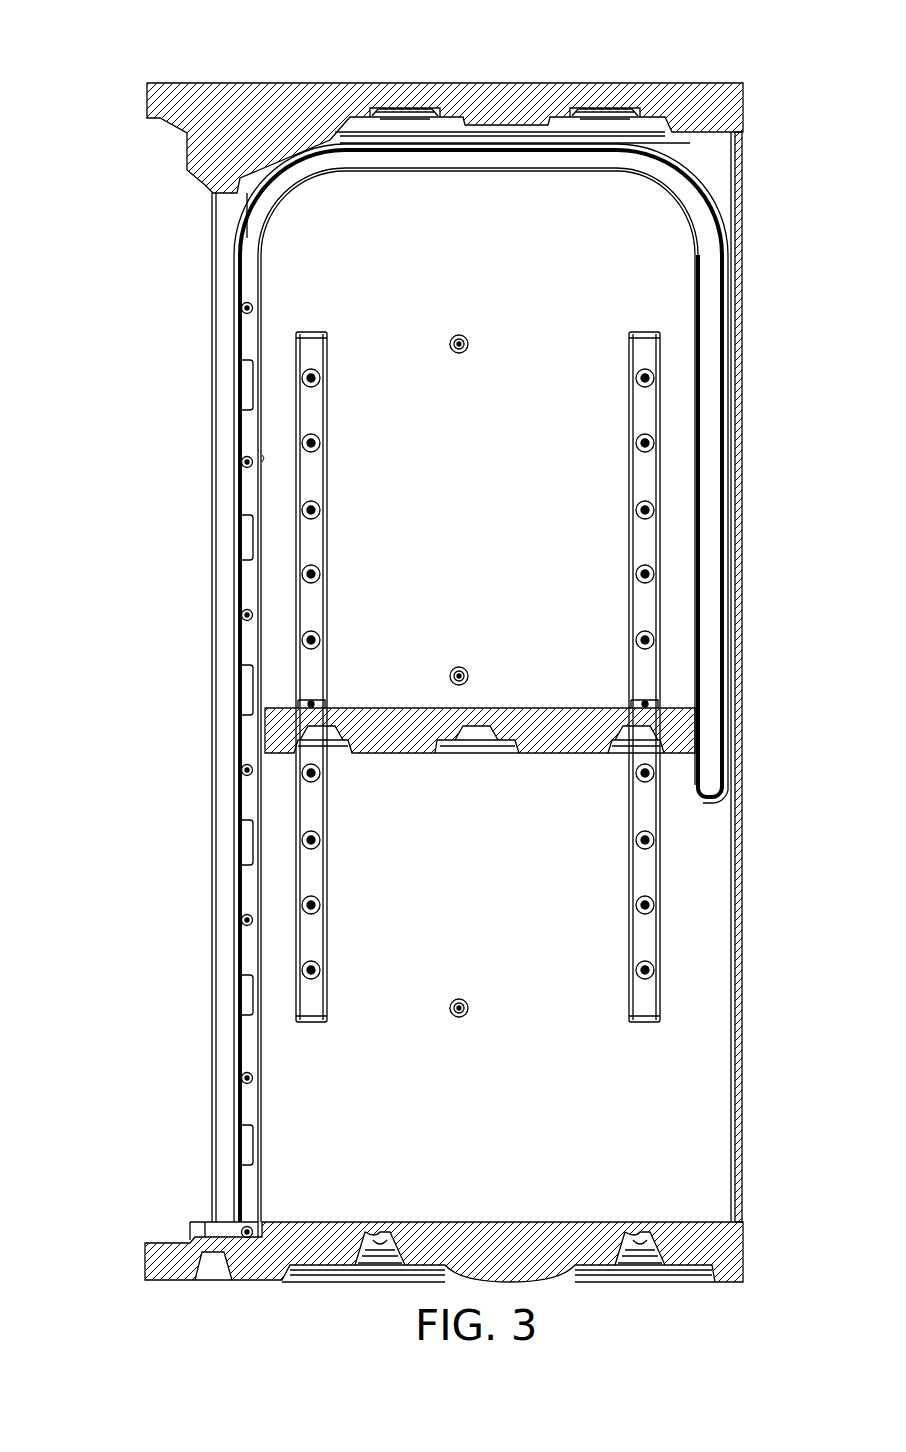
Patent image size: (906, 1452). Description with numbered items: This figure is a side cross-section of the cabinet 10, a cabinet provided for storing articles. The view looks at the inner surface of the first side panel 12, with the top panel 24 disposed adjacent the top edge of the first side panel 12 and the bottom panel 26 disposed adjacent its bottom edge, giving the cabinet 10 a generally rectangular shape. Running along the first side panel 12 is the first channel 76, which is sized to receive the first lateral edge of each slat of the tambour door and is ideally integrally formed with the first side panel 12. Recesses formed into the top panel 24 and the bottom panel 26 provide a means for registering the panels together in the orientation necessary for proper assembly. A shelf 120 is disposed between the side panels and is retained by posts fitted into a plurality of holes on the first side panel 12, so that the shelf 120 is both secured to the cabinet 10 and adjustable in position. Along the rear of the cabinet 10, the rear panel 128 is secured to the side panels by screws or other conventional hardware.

The cabinet 10 is at (124, 70).
The first side panel 12 is at (471, 504).
The top panel 24 is at (250, 92).
The bottom panel 26 is at (232, 1283).
The first channel 76 is at (512, 160).
The shelf 120 is at (390, 755).
The rear panel 128 is at (745, 850).